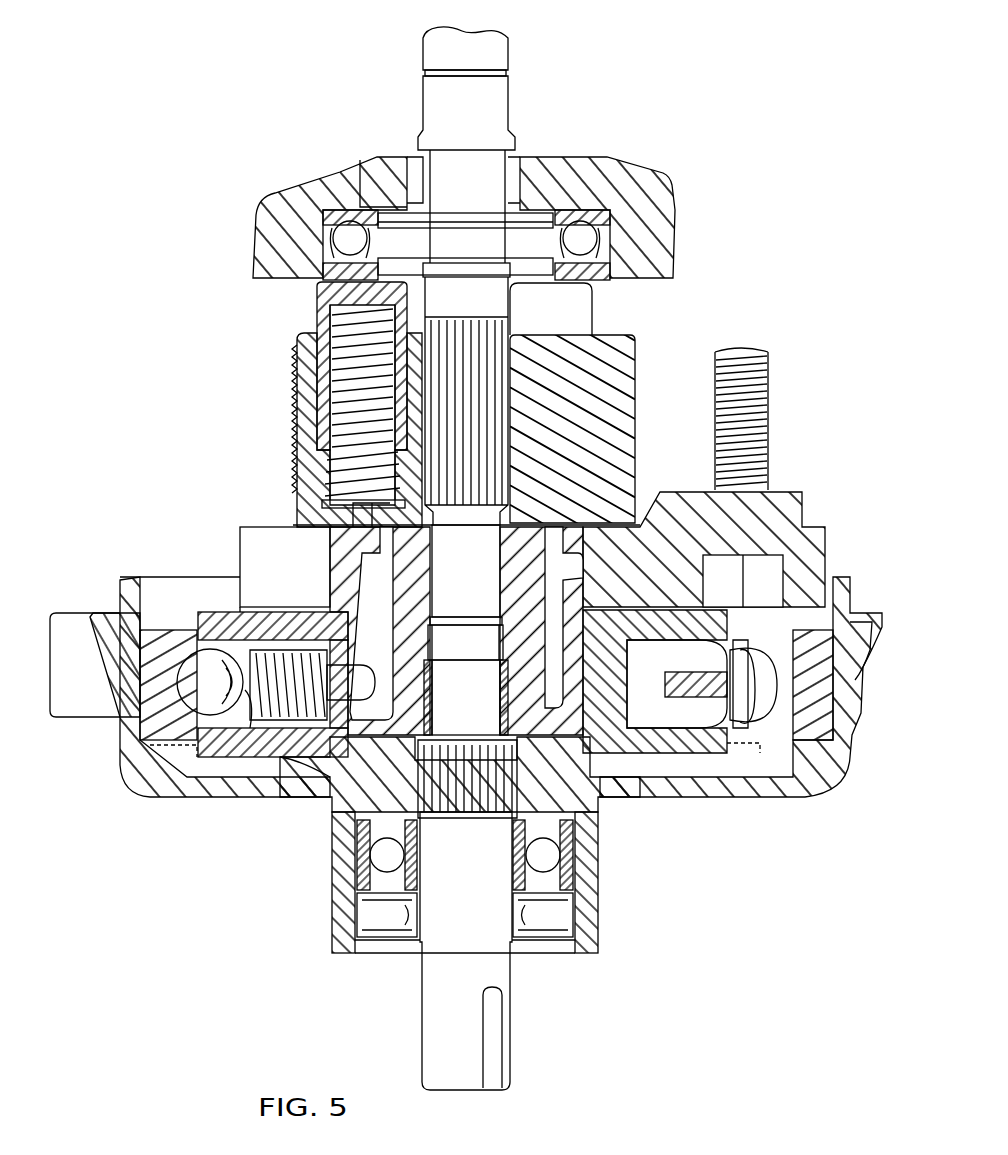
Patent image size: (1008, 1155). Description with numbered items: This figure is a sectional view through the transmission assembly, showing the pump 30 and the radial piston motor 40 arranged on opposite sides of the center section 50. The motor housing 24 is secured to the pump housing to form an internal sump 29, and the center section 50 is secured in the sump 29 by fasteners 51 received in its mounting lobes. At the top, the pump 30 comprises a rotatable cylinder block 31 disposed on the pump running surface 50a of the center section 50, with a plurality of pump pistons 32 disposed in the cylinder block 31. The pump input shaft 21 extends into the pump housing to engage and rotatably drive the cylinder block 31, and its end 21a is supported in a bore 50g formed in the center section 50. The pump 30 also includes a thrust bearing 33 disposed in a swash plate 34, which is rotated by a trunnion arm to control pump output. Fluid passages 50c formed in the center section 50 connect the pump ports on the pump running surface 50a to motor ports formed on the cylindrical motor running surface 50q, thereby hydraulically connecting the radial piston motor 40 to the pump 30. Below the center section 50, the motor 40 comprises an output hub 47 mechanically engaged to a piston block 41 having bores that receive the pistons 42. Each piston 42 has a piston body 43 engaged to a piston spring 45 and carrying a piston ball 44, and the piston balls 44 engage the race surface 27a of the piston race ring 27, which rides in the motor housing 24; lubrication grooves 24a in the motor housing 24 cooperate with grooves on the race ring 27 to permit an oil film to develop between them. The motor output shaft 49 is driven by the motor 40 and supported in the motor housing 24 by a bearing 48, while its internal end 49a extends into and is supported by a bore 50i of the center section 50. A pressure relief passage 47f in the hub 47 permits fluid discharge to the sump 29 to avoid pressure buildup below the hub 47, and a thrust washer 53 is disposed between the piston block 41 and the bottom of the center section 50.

The pump input shaft 21 is at (480, 116).
The end of pump input shaft 21a is at (490, 558).
The motor housing 24 is at (142, 780).
The lubrication grooves 24a is at (753, 740).
The piston race ring 27 is at (150, 640).
The race surface 27a is at (748, 712).
The sump 29 is at (370, 792).
The pump 30 is at (202, 285).
The cylinder block 31 is at (637, 361).
The pump pistons 32 is at (342, 288).
The thrust bearing 33 is at (584, 240).
The swash plate 34 is at (665, 232).
The radial piston motor 40 is at (186, 546).
The piston block 41 is at (207, 745).
The pistons 42 is at (187, 645).
The piston body 43 is at (237, 717).
The piston ball 44 is at (205, 683).
The piston spring 45 is at (277, 655).
The output hub 47 is at (590, 765).
The pressure relief passage 47f is at (380, 762).
The bearing 48 is at (548, 858).
The motor output shaft 49 is at (479, 889).
The internal end of motor output shaft 49a is at (490, 716).
The center section 50 is at (246, 533).
The pump running surface 50a is at (318, 502).
The fluid passages 50c is at (372, 575).
The bore 50g is at (433, 563).
The bore 50i is at (497, 675).
The motor running surface 50q is at (603, 637).
The fasteners 51 is at (742, 348).
The thrust washer 53 is at (610, 586).